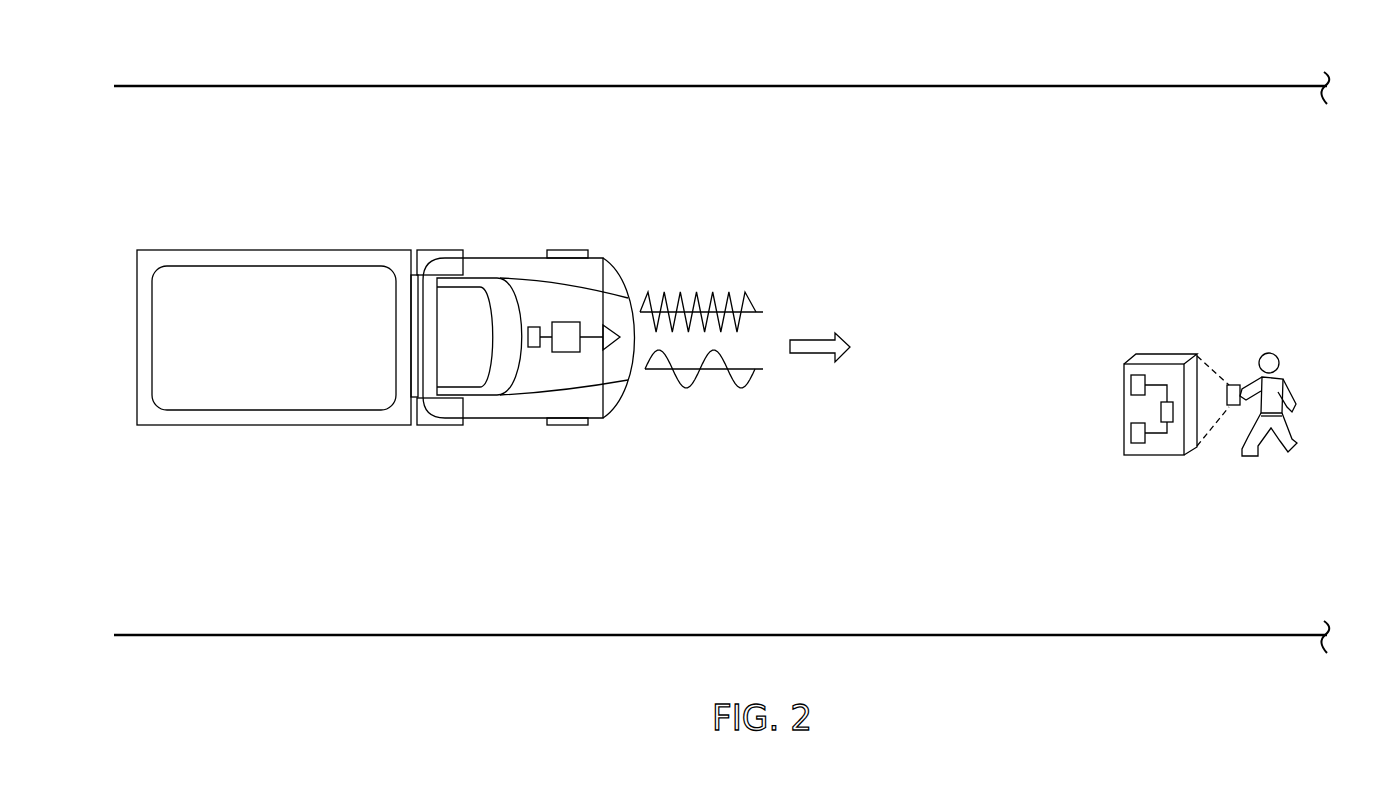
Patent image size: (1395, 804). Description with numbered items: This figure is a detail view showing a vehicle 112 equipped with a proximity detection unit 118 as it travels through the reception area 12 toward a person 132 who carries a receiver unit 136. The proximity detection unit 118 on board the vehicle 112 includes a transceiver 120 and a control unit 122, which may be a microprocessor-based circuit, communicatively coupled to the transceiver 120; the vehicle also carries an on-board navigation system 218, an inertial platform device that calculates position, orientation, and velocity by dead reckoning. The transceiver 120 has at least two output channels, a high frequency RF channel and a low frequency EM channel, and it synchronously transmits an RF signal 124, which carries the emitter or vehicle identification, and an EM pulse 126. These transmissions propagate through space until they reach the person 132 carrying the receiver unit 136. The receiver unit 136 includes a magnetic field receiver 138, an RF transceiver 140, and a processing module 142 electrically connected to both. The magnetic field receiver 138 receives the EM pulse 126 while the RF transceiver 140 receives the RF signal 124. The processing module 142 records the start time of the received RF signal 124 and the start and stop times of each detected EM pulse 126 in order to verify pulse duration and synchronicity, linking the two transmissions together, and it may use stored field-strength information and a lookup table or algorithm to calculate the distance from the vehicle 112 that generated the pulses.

The roadway 12 is at (933, 104).
The vehicle 112 is at (241, 280).
The proximity detection unit 118 is at (546, 367).
The navigation system 218 is at (534, 347).
The control unit 122 is at (566, 352).
The transceiver 120 is at (614, 346).
The RF signal 124 is at (745, 292).
The EM pulse 126 is at (688, 390).
The person 132 is at (1290, 357).
The receiver unit 136 is at (1150, 371).
The magnetic field receiver 138 is at (1130, 383).
The RF transceiver 140 is at (1130, 431).
The processing module 142 is at (1170, 425).